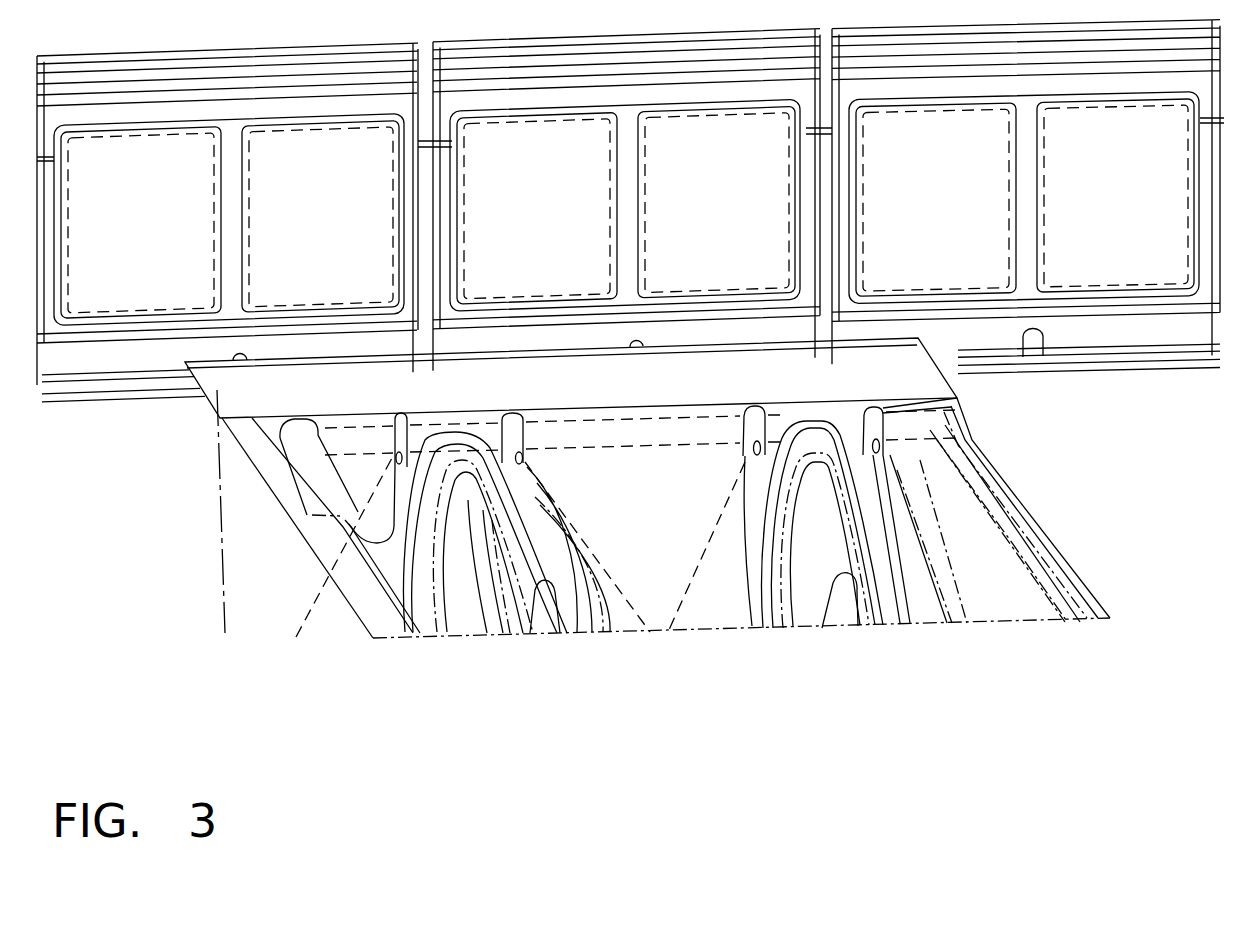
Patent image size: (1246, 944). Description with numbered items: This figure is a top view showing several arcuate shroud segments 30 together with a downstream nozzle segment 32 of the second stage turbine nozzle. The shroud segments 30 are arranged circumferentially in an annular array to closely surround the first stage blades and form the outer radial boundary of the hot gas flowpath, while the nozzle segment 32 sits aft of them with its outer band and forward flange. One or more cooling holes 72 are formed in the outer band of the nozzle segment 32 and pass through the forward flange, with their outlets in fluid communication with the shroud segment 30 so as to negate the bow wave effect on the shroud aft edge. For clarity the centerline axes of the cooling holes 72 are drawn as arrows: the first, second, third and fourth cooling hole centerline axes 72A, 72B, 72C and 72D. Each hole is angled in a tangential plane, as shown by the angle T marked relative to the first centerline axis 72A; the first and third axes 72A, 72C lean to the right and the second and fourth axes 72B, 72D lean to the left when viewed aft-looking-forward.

The shroud segment 30 is at (158, 352).
The nozzle segment 32 is at (1034, 462).
The cooling hole 72 is at (514, 452).
The first cooling hole centerline axis 72A is at (311, 612).
The second cooling hole centerline axis 72B is at (565, 515).
The third cooling hole centerline axis 72C is at (712, 540).
The fourth cooling hole centerline axis 72D is at (980, 567).
The tangential angle T is at (318, 588).